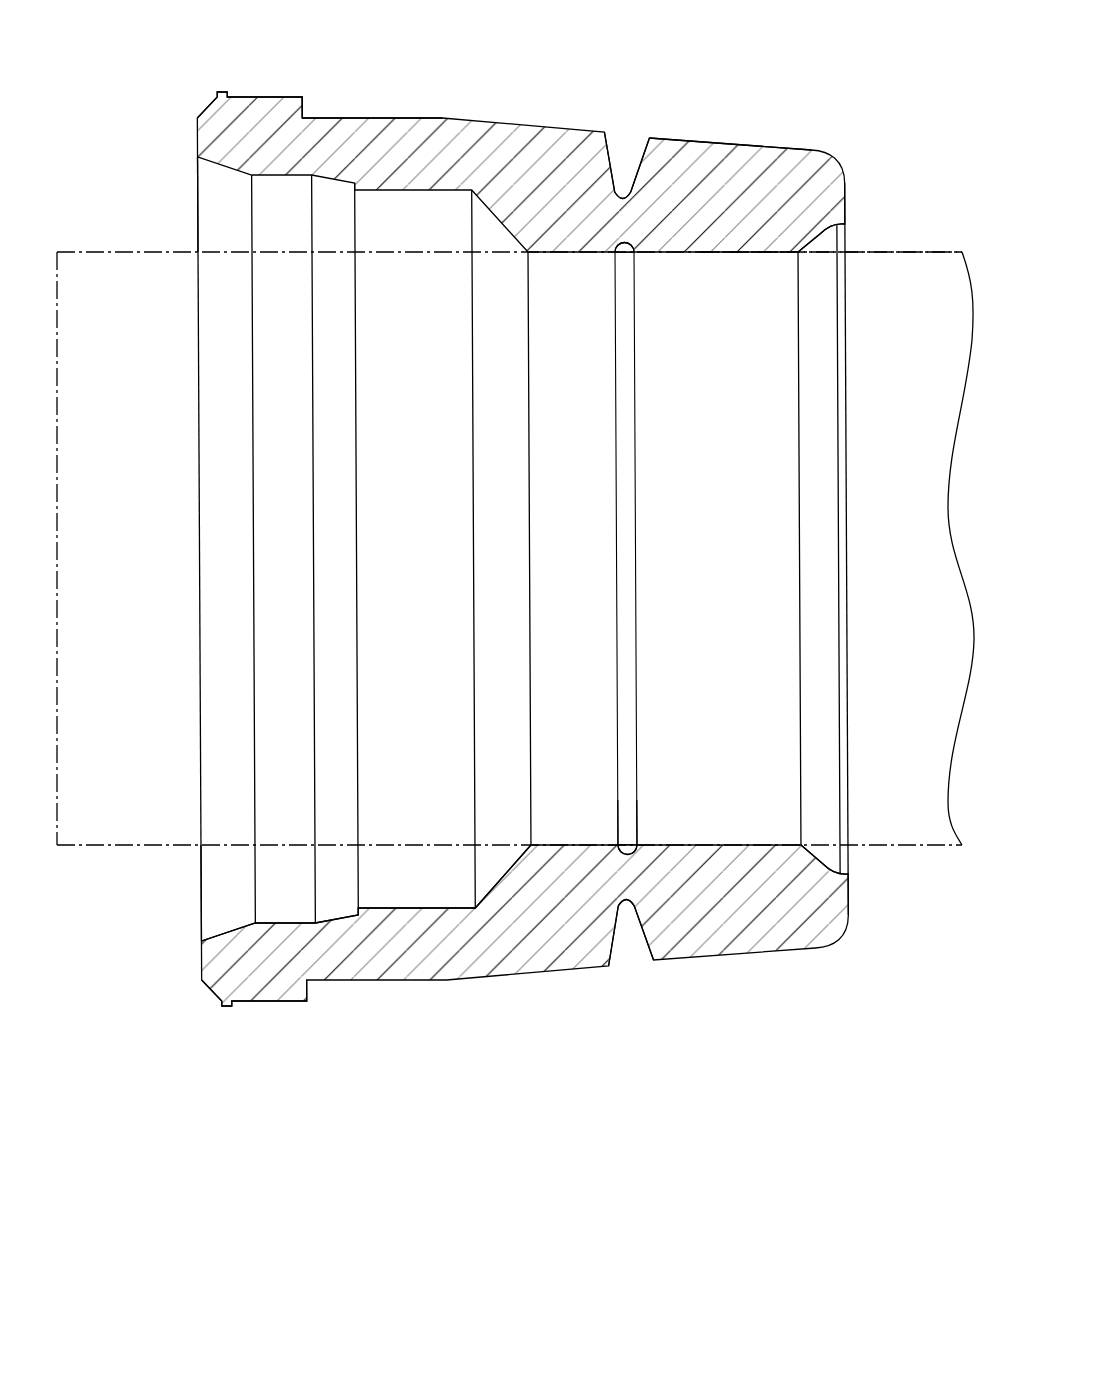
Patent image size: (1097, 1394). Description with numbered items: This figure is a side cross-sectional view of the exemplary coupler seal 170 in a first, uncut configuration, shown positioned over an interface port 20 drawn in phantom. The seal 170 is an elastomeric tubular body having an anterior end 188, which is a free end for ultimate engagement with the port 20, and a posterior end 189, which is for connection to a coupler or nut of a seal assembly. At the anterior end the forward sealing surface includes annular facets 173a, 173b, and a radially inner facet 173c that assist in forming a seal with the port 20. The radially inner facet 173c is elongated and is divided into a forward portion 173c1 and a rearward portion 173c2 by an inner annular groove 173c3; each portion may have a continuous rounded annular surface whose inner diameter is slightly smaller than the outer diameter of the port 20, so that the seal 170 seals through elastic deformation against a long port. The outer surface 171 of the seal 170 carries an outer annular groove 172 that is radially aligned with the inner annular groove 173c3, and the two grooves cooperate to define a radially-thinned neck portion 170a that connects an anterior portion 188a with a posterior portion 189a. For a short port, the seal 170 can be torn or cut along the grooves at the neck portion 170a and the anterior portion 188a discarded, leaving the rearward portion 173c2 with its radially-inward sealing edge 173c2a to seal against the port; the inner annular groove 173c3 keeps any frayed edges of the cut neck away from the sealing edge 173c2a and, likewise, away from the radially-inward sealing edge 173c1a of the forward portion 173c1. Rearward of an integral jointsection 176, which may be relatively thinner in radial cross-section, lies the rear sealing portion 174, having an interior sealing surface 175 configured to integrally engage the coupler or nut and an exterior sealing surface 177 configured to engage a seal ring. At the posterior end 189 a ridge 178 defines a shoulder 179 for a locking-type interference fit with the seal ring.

The interface port 20 is at (101, 236).
The coupler seal 170 is at (158, 171).
The neck portion 170a is at (624, 883).
The outer surface 171 is at (707, 143).
The outer annular groove 172 is at (610, 140).
The annular facet 173a is at (845, 195).
The annular facet 173b is at (815, 243).
The radially inner facet 173c is at (706, 262).
The forward portion 173c1 is at (728, 845).
The radially-inward sealing edge 173c1a is at (637, 256).
The rearward portion 173c2 is at (568, 845).
The radially-inward sealing edge 173c2a is at (612, 256).
The inner annular groove 173c3 is at (627, 847).
The rear sealing portion 174 is at (190, 366).
The interior sealing surface 175 is at (326, 909).
The integral jointsection 176 is at (478, 1002).
The exterior sealing surface 177 is at (258, 1003).
The ridge 178 is at (303, 97).
The shoulder 179 is at (306, 116).
The anterior end 188 is at (871, 461).
The anterior portion 188a is at (755, 168).
The posterior end 189 is at (160, 625).
The posterior portion 189a is at (503, 130).